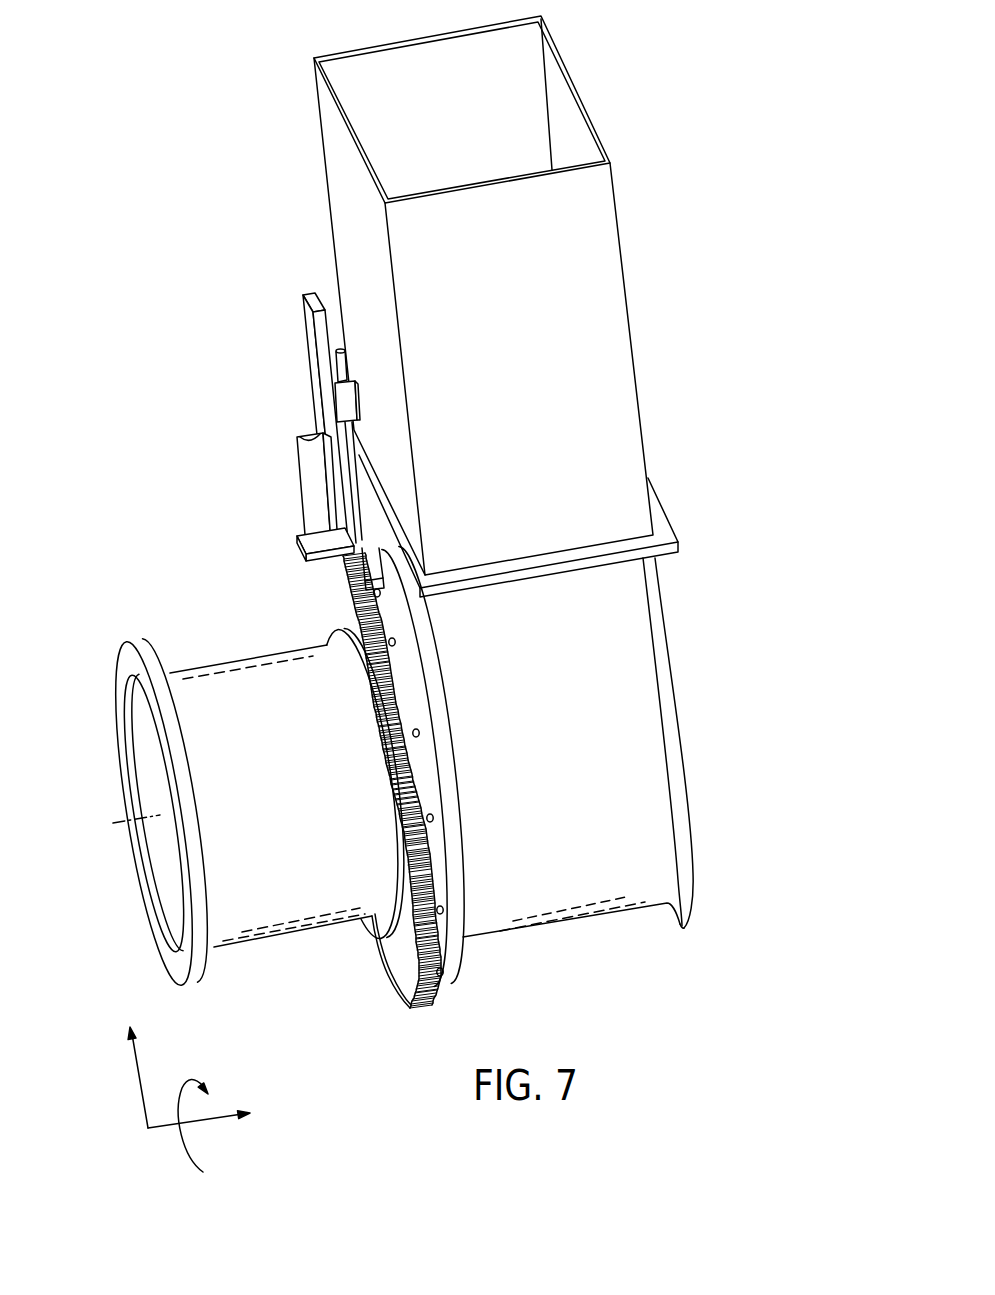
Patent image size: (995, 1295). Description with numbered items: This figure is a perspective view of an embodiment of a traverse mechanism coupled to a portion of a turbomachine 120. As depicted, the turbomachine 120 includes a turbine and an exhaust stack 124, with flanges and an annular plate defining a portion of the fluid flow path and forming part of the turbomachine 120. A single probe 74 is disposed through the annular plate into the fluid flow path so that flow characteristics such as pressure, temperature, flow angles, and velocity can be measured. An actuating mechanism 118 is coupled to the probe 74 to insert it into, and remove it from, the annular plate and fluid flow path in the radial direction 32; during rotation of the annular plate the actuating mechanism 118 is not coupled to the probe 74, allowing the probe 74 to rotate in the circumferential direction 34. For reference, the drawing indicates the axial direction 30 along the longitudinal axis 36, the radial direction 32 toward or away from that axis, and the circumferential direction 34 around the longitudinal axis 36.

The exhaust stack 124 is at (633, 351).
The turbomachine 120 is at (679, 522).
The actuating mechanism 118 is at (305, 332).
The probe 74 is at (343, 356).
The longitudinal axis 36 is at (108, 823).
The axial direction 30 is at (197, 1125).
The radial direction 32 is at (143, 1082).
The circumferential direction 34 is at (180, 1142).